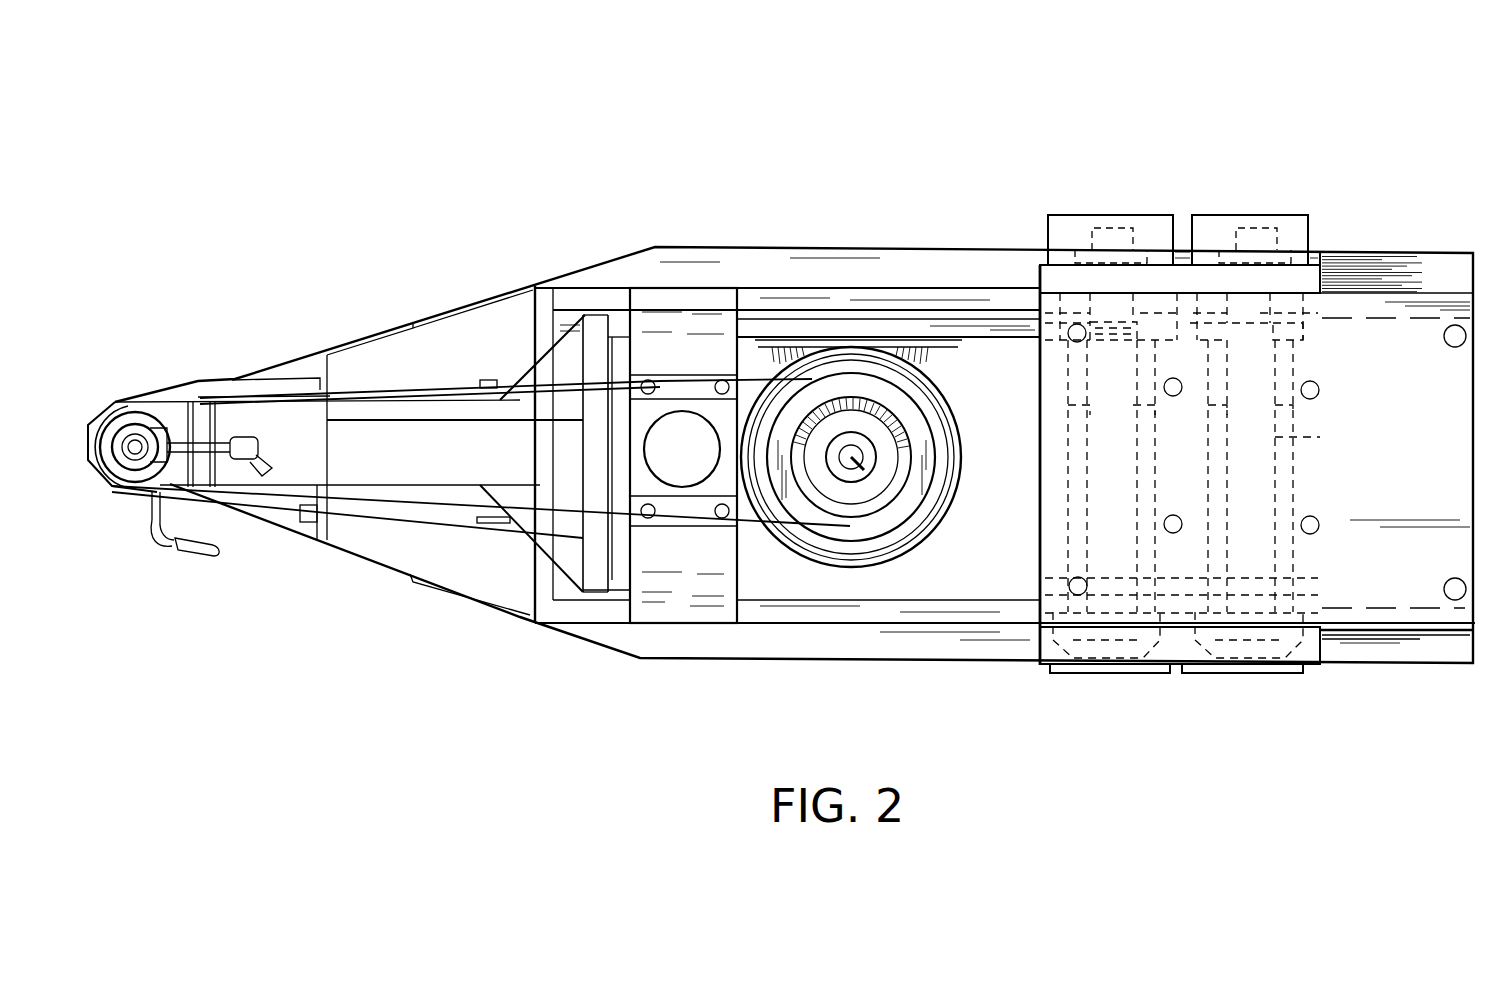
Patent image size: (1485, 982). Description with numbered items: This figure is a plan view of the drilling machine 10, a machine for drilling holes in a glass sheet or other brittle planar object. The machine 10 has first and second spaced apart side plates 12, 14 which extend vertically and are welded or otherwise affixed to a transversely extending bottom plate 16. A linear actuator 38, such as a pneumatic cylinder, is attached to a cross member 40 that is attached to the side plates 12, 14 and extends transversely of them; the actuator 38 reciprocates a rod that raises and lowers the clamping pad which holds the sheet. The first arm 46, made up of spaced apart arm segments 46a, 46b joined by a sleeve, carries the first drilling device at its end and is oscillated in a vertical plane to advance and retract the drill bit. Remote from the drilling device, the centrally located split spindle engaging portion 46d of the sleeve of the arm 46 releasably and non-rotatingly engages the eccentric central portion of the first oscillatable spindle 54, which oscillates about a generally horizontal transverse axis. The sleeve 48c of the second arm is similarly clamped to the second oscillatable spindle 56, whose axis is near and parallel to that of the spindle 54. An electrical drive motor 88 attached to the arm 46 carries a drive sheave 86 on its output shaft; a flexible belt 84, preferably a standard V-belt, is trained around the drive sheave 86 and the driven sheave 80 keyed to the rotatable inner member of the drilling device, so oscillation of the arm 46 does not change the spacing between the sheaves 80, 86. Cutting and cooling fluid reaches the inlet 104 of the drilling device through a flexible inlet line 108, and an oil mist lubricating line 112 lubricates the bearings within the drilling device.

The drilling machine 10 is at (952, 160).
The first side plate 12 is at (933, 613).
The second side plate 14 is at (883, 295).
The bottom plate 16 is at (1016, 474).
The linear actuator 38 is at (699, 365).
The cross member 40 is at (740, 293).
The first arm 46 is at (960, 338).
The arm segment 46a is at (995, 325).
The arm segment 46b is at (993, 603).
The split spindle engaging portion 46d is at (1294, 487).
The sleeve 48c is at (1067, 403).
The first oscillatable spindle 54 is at (1291, 434).
The second oscillatable spindle 56 is at (1143, 467).
The driven sheave 80 is at (102, 458).
The flexible belt 84 is at (770, 522).
The drive sheave 86 is at (893, 520).
The electrical drive motor 88 is at (948, 522).
The inlet 104 is at (150, 428).
The flexible inlet line 108 is at (225, 443).
The oil mist lubricating line 112 is at (190, 547).